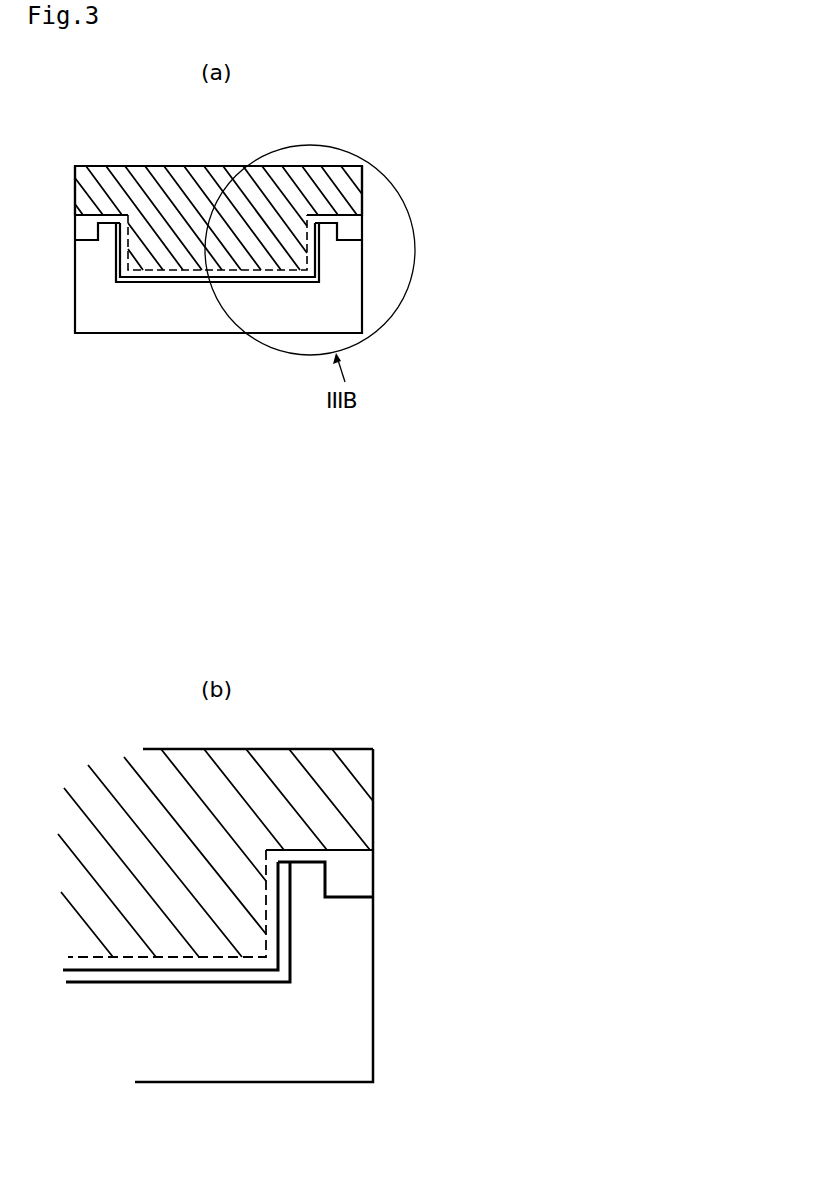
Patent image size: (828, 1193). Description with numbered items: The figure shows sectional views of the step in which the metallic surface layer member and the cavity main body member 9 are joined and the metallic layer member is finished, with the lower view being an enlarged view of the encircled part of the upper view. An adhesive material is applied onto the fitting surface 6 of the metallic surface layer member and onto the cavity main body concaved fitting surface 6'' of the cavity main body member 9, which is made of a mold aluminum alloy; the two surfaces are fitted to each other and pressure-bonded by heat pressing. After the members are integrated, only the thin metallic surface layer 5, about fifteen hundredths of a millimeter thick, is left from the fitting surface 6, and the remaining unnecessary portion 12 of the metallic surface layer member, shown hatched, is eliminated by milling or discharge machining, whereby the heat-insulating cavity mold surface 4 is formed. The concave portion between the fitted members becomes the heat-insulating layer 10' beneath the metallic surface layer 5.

The unnecessary portion (3) of the metallic surface layer member 12 is at (340, 182).
The cavity main body member 9 is at (162, 313).
The heat-insulating cavity mold surface 4 is at (168, 924).
The metallic surface layer 5 is at (168, 964).
The fitting surface of the metallic surface layer member 6 is at (263, 596).
The cavity main body concaved fitting surface 6'' is at (271, 614).
The heat-insulating layer 10' is at (274, 1029).